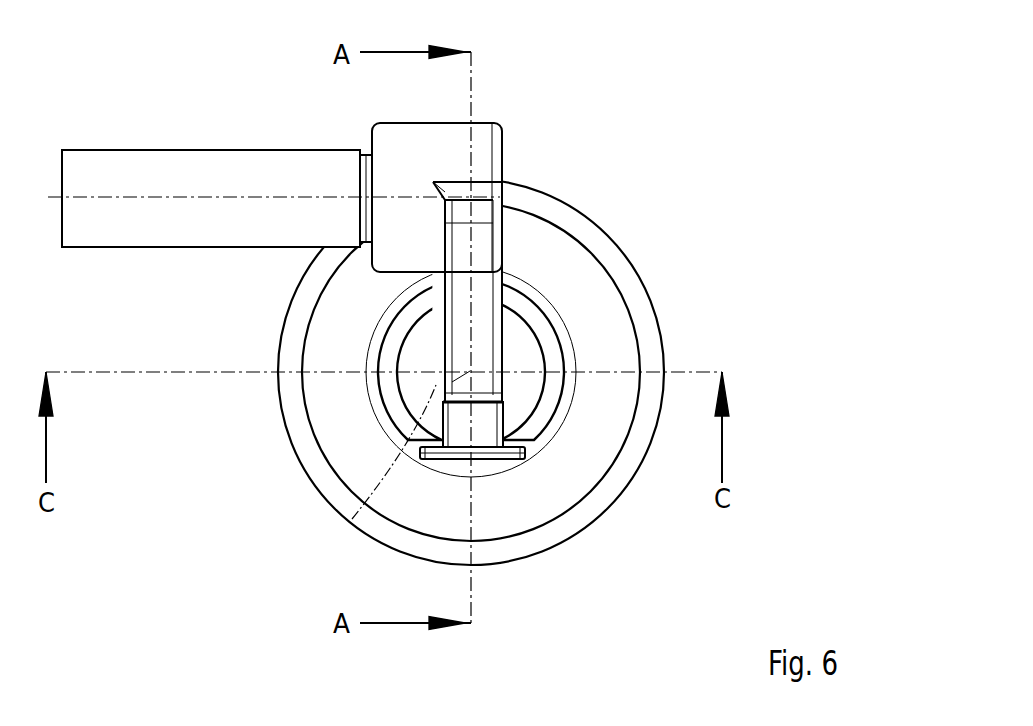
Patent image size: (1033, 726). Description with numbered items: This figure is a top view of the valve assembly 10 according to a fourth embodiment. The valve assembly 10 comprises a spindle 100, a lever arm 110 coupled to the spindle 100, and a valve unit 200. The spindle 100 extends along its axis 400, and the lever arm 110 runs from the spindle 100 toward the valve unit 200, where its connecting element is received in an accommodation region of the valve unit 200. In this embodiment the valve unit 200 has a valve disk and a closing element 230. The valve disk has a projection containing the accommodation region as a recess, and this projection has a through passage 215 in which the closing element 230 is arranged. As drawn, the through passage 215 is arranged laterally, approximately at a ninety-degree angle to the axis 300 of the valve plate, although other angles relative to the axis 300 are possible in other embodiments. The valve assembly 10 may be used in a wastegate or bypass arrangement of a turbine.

The valve assembly 10 is at (713, 153).
The spindle 100 is at (124, 148).
The lever arm 110 is at (483, 258).
The valve unit 200 is at (668, 300).
The through passage 215 is at (443, 415).
The closing element 230 is at (487, 445).
The axis of valve plate 300 is at (372, 505).
The axis of spindle 400 is at (203, 197).